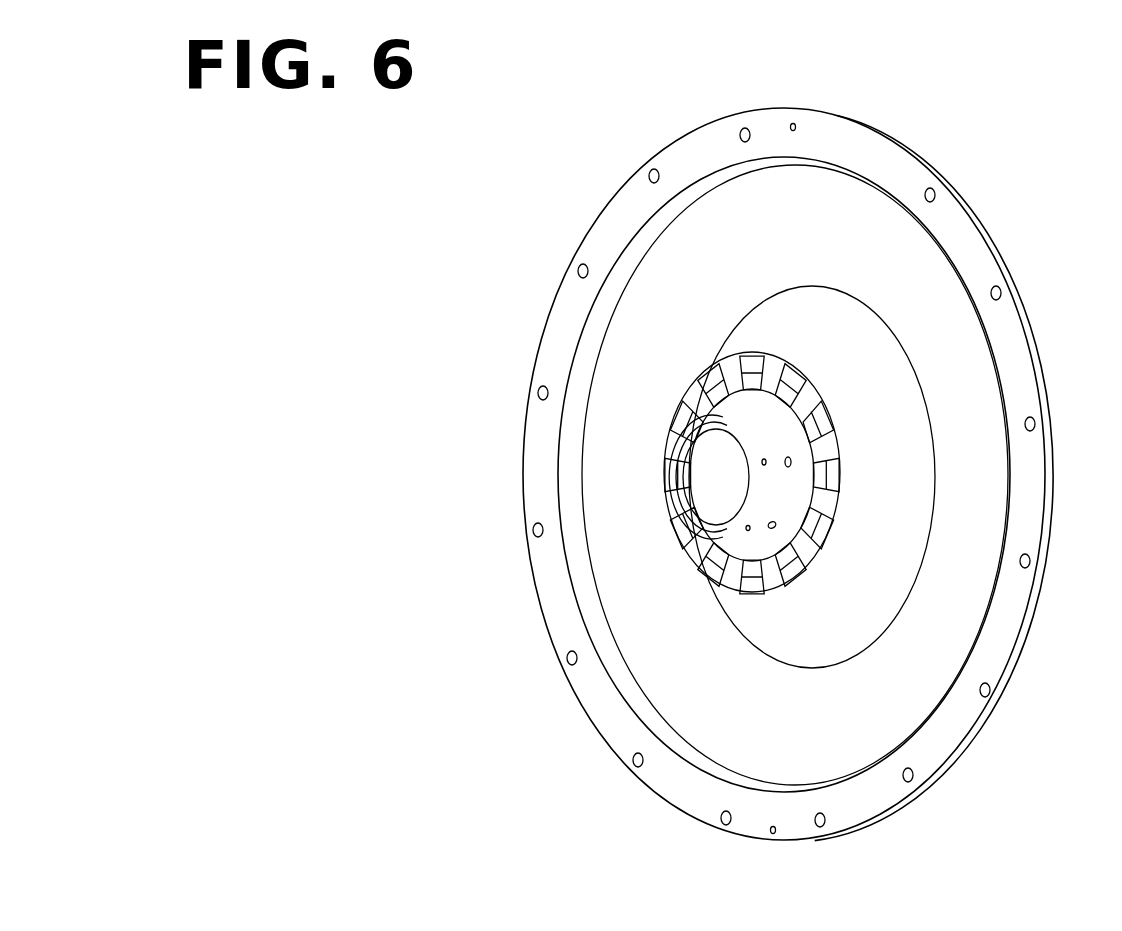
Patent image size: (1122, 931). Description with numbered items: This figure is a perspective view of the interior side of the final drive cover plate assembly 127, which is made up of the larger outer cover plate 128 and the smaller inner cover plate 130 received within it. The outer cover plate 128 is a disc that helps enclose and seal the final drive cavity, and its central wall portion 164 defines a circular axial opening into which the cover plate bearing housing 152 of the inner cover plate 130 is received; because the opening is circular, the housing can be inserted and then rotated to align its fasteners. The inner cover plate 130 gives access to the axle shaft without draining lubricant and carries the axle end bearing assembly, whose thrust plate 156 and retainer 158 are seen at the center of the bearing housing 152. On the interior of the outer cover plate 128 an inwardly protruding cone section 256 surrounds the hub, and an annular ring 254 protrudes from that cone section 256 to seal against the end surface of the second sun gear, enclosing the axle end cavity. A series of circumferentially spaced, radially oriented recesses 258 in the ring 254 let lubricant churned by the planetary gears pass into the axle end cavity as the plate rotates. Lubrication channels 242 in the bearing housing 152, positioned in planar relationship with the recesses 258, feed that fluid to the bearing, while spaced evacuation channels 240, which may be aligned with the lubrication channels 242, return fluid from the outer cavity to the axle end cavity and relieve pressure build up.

The cover plate assembly 127 is at (1029, 182).
The outer cover plate 128 is at (975, 386).
The inner cover plate 130 is at (777, 433).
The cover plate bearing housing 152 is at (725, 545).
The thrust plate 156 is at (729, 489).
The retainer 158 is at (668, 478).
The central wall portion 164 is at (740, 408).
The evacuation channels 240 is at (748, 530).
The lubrication channels 242 is at (776, 530).
The annular ring 254 is at (787, 365).
The cone section 256 is at (783, 297).
The recesses 258 is at (826, 483).